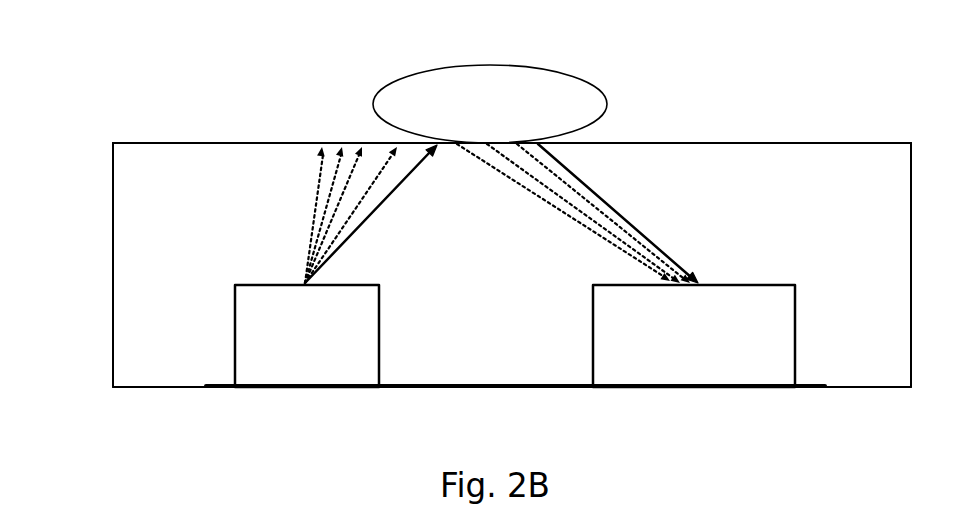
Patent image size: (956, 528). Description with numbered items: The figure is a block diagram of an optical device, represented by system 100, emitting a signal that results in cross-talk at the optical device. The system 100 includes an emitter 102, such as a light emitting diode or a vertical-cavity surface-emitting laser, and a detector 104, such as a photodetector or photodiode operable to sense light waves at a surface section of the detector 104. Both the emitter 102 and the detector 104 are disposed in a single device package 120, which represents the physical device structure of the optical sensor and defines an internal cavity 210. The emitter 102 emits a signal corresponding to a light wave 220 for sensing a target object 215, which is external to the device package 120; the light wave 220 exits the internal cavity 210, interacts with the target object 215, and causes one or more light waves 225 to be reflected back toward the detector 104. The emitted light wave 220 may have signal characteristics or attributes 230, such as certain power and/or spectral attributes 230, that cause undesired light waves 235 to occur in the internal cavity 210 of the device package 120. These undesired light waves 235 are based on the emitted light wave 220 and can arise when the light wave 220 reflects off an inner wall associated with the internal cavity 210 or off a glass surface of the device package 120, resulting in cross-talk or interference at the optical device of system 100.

The system 100 is at (147, 131).
The emitter 102 is at (235, 335).
The detector 104 is at (795, 335).
The device package 120 is at (838, 143).
The internal cavity 210 is at (911, 223).
The target object 215 is at (520, 65).
The light wave 220 is at (411, 172).
The light waves 225 is at (590, 183).
The signal characteristics or attributes 230 is at (308, 205).
The undesired light waves 235 is at (573, 232).